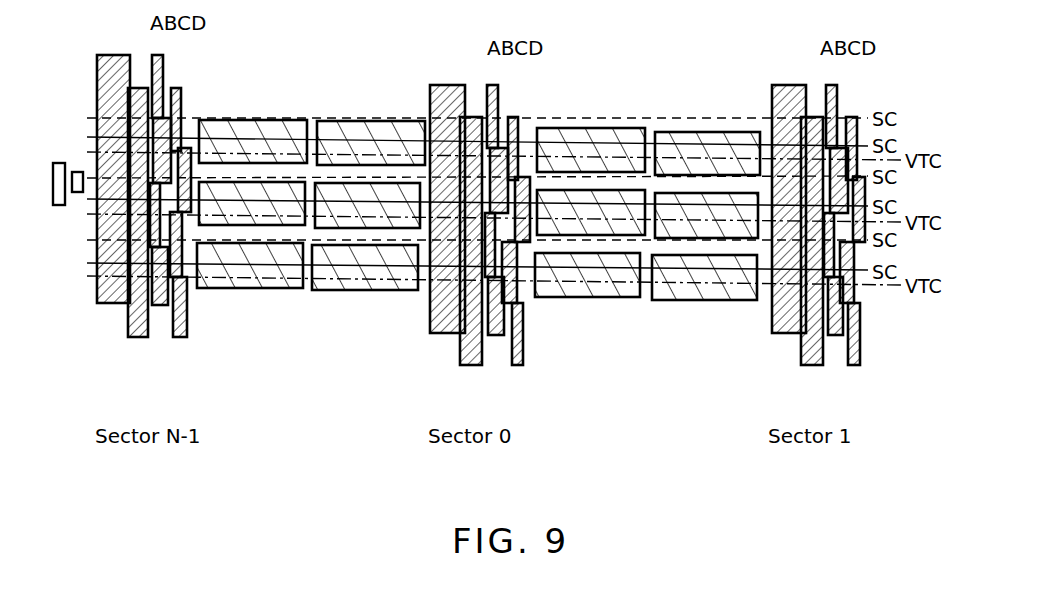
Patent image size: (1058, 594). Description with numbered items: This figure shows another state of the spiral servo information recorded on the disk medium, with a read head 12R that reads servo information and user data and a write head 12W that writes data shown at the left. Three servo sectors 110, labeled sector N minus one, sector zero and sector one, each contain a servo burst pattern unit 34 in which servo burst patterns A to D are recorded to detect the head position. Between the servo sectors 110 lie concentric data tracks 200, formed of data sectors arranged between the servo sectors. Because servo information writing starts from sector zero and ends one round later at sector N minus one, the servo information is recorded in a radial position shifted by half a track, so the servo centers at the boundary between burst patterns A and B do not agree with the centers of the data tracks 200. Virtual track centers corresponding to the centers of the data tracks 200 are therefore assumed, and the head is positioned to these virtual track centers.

The read head 12R is at (77, 172).
The write head 12W is at (57, 207).
The servo burst pattern unit 34 is at (185, 80).
The servo sector 110 is at (168, 343).
The data track 200 is at (308, 313).